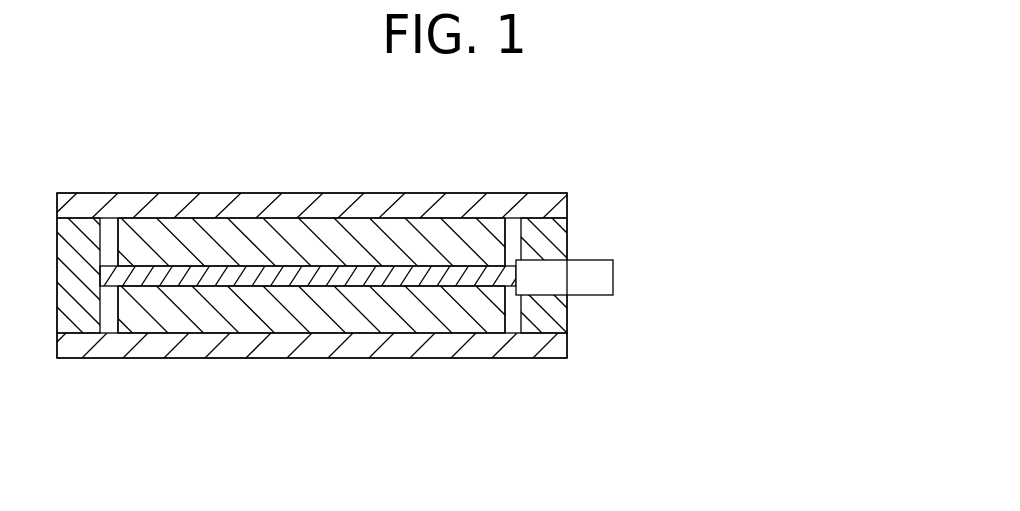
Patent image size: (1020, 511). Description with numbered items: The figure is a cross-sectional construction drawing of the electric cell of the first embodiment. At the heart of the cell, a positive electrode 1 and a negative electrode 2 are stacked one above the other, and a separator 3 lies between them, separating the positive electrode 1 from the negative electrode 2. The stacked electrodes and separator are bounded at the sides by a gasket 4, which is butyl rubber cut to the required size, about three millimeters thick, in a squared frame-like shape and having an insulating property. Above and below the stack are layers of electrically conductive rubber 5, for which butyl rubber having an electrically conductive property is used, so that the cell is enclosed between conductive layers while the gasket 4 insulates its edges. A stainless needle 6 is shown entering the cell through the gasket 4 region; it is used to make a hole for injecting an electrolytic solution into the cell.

The positive electrode 1 is at (160, 233).
The negative electrode 2 is at (218, 318).
The separator 3 is at (362, 272).
The gasket 4 is at (562, 228).
The electrically conductive rubber 5 is at (553, 198).
The stainless needle 6 is at (603, 280).